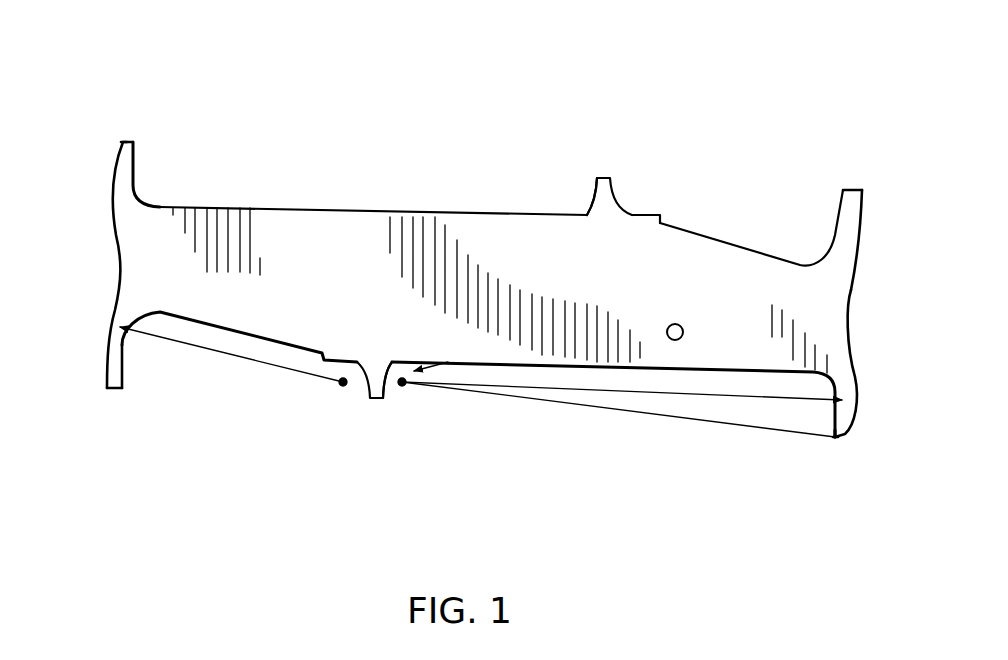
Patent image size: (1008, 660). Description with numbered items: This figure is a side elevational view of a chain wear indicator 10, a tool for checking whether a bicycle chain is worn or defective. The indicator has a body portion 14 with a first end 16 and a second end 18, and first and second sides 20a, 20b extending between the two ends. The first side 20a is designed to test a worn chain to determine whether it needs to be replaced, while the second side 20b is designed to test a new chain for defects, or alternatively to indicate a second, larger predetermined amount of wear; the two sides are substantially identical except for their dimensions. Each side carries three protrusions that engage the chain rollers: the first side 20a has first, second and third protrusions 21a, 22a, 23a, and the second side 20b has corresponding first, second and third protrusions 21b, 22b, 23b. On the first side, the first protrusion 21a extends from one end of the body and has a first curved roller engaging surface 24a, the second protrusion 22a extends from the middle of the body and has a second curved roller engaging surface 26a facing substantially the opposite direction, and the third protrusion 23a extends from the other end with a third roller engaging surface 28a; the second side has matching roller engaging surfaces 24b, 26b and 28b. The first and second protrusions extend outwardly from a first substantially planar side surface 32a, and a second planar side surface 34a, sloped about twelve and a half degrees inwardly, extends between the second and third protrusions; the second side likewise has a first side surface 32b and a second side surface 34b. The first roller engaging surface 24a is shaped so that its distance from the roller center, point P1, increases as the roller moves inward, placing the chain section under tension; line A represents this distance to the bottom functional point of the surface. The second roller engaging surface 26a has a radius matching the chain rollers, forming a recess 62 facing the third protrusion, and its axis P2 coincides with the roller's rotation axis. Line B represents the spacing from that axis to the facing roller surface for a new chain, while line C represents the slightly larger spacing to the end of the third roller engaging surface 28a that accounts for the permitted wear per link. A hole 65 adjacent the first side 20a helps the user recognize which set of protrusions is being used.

The chain wear indicator 10 is at (571, 148).
The body portion 14 is at (603, 330).
The first end 16 is at (119, 273).
The second end 18 is at (851, 297).
The first side 20a is at (499, 376).
The second side 20b is at (458, 204).
The first protrusion 21a is at (116, 394).
The first protrusion 21b is at (845, 188).
The second protrusion 22a is at (383, 414).
The second protrusion 22b is at (613, 166).
The third protrusion 23a is at (832, 441).
The third protrusion 23b is at (132, 142).
The first curved roller engaging surface 24a is at (123, 349).
The first curved roller engaging surface 24b is at (863, 200).
The second curved roller engaging surface 26a is at (388, 390).
The second curved roller engaging surface 26b is at (592, 178).
The third roller engaging surface 28a is at (852, 415).
The third roller engaging surface 28b is at (118, 149).
The first substantially planar side surface 32a is at (757, 378).
The first substantially planar side surface 32b is at (307, 207).
The second planar side surface 34a is at (234, 337).
The second planar side surface 34b is at (752, 246).
The recess 62 is at (448, 362).
The hole 65 is at (683, 333).
The line A is at (303, 373).
The line B is at (670, 420).
The line C is at (748, 397).
The point P1 is at (342, 392).
The axis P2 is at (402, 378).